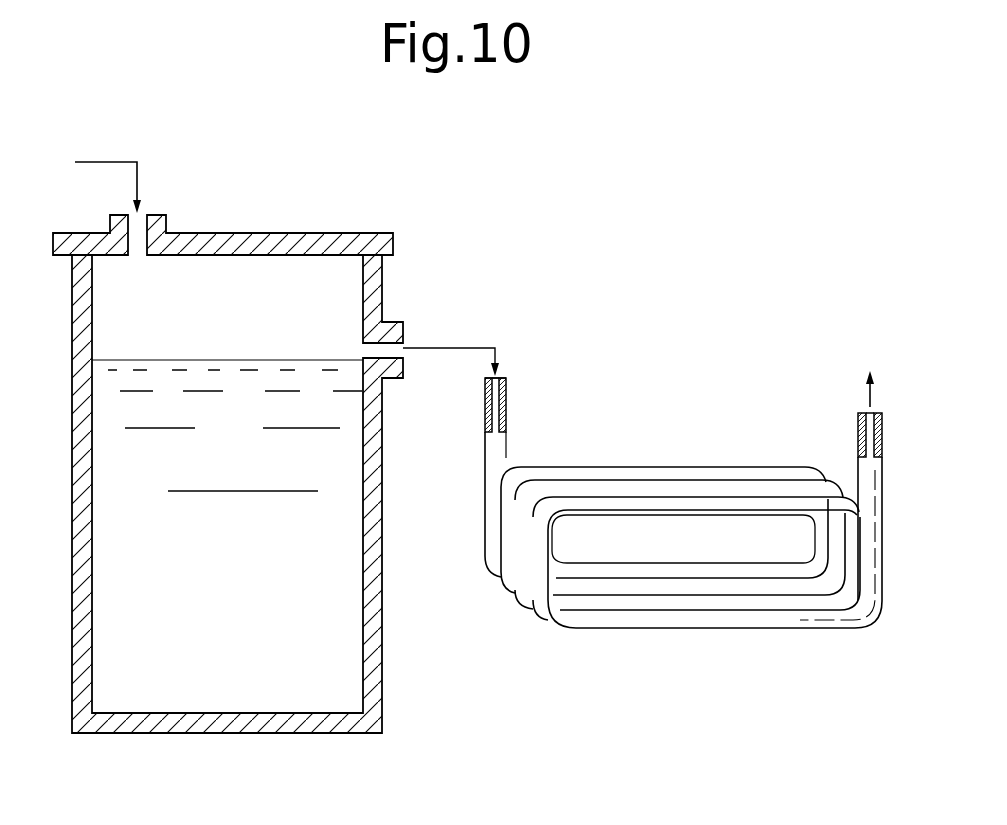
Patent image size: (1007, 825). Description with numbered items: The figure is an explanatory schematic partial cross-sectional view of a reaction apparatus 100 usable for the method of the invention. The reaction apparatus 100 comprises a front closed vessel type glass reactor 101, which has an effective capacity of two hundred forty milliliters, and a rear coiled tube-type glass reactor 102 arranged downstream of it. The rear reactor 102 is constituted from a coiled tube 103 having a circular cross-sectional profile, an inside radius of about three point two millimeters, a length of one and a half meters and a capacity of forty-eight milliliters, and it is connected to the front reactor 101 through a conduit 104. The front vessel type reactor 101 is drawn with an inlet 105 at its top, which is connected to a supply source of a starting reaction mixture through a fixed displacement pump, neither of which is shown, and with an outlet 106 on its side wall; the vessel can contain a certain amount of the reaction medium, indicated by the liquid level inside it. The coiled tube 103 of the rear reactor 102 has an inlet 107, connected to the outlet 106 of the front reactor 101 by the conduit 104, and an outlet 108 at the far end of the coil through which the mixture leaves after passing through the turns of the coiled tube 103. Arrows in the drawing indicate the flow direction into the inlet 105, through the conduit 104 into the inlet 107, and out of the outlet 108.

The reaction apparatus 100 is at (470, 212).
The front closed vessel type glass reactor 101 is at (254, 210).
The rear coiled tube-type glass reactor 102 is at (703, 380).
The coiled tube 103 is at (507, 462).
The conduit 104 is at (471, 346).
The inlet 105 is at (141, 213).
The outlet 106 is at (408, 342).
The inlet 107 is at (507, 416).
The outlet 108 is at (858, 432).